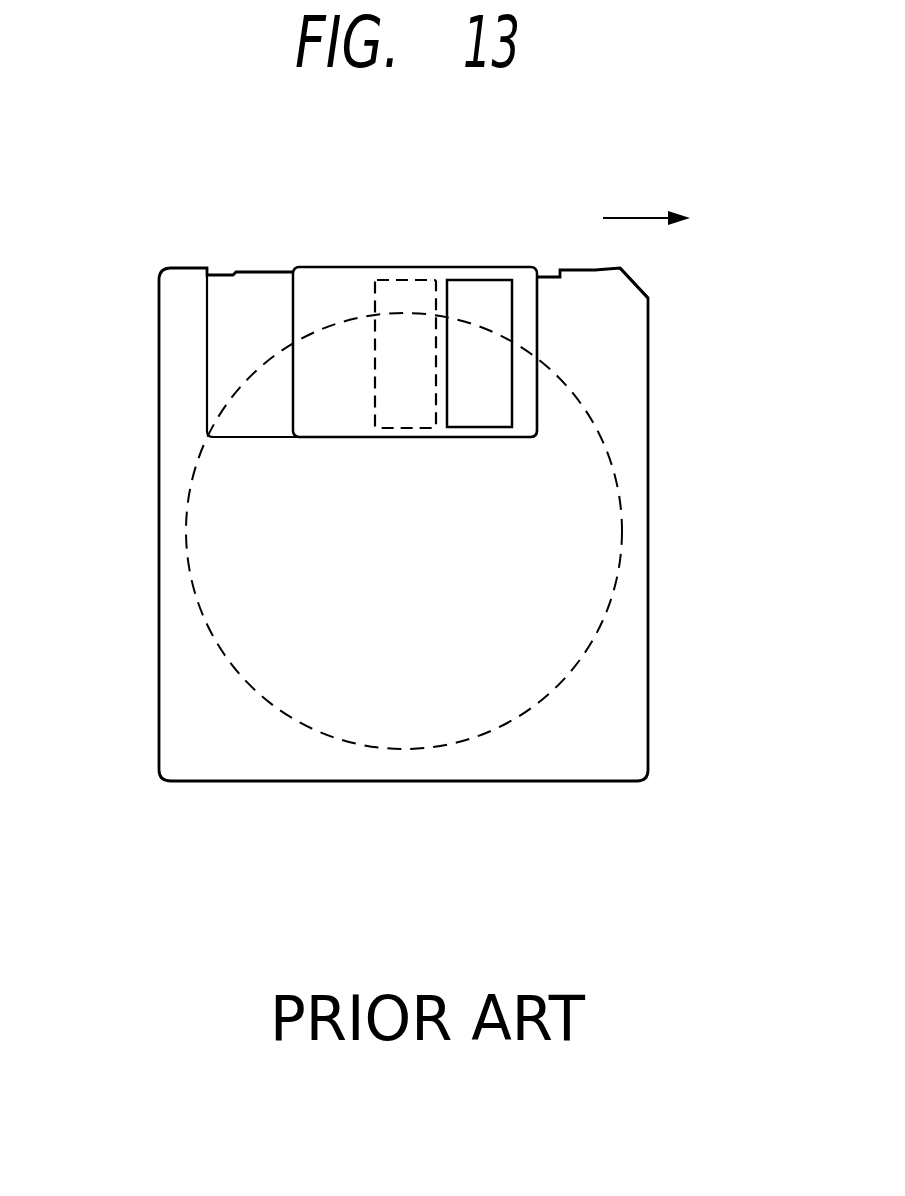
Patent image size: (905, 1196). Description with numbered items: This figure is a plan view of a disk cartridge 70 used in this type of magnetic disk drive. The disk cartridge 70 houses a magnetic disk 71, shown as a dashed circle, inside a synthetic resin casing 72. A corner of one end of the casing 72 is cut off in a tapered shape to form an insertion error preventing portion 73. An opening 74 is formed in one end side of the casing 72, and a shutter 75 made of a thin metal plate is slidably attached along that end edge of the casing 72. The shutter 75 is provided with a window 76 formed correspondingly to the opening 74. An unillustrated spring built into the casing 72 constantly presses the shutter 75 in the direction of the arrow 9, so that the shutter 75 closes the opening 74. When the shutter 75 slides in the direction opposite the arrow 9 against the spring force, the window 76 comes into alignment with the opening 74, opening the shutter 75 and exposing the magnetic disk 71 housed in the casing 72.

The disk cartridge 70 is at (656, 466).
The magnetic disk 71 is at (227, 667).
The casing 72 is at (172, 357).
The insertion error preventing portion 73 is at (643, 282).
The opening 74 is at (383, 347).
The shutter 75 is at (335, 287).
The window 76 is at (510, 303).
The arrow g 9 is at (646, 200).